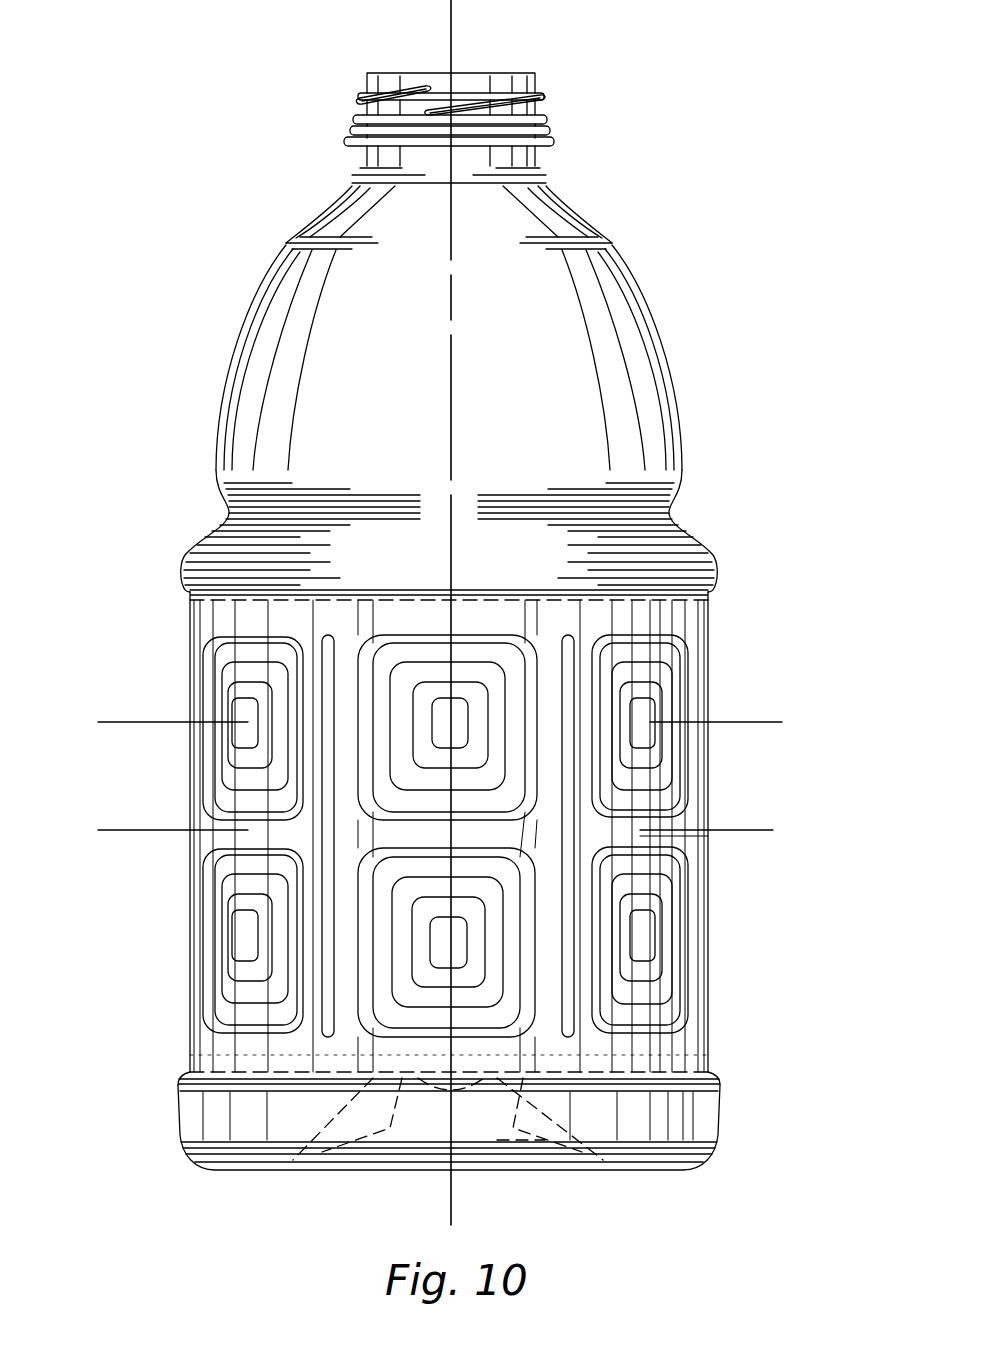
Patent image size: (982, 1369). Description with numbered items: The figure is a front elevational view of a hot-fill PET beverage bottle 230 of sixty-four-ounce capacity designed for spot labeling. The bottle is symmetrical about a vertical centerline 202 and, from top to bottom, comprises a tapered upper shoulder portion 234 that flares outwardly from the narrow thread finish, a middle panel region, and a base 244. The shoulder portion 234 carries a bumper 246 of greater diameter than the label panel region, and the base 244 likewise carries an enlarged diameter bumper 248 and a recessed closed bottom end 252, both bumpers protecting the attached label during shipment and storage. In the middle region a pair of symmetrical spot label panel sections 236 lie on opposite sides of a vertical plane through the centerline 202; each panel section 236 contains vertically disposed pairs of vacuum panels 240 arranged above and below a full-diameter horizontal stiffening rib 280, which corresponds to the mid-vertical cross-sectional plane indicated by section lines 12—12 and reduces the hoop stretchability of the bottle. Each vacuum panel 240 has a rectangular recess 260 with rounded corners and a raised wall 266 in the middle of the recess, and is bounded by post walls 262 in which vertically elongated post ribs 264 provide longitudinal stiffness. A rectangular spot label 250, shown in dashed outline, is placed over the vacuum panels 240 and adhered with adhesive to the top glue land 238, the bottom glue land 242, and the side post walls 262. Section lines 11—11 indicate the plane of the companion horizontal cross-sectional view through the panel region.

The vertical centerline 202 is at (454, 54).
The beverage bottle 230 is at (232, 346).
The upper shoulder portion 234 is at (256, 296).
The spot label panel section 236 is at (188, 617).
The top glue land 238 is at (684, 611).
The vacuum panels 240 is at (688, 657).
The bottom glue land 242 is at (668, 1055).
The base 244 is at (712, 1146).
The bumper 246 is at (702, 566).
The enlarged diameter bumper 248 is at (714, 1090).
The spot label 250 is at (270, 586).
The recessed closed bottom end 252 is at (515, 1140).
The recess 260 is at (436, 658).
The post wall 262 is at (349, 650).
The post rib 264 is at (334, 680).
The raised wall 266 is at (436, 738).
The horizontal stiffening rib 280 is at (490, 838).
The section line 11— 11 is at (112, 716).
The section line 12— 12 is at (112, 824).